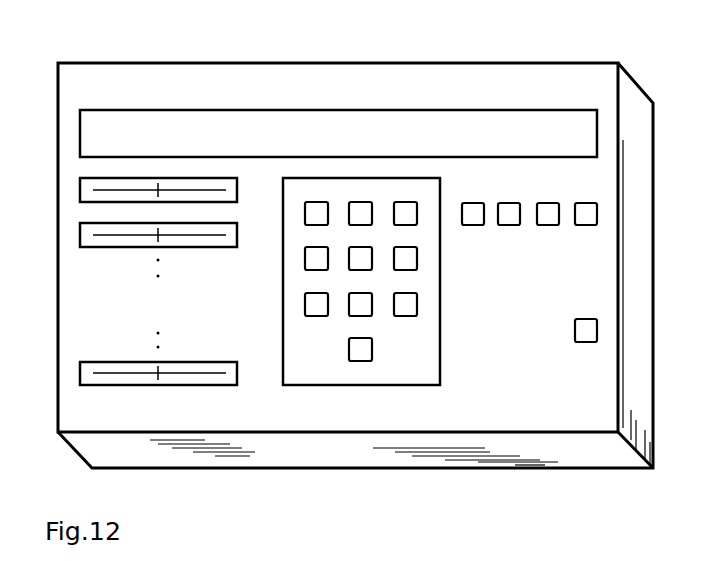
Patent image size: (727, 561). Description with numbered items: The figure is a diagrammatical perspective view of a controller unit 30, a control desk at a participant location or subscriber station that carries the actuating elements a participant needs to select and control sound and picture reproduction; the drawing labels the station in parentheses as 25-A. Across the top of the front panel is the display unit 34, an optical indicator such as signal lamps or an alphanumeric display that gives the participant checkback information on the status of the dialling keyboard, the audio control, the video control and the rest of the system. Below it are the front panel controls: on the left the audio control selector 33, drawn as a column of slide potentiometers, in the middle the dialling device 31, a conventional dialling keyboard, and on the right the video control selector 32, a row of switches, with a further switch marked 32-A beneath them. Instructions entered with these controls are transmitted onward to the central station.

The communication terminal unit 25-A is at (355, 243).
The controller unit 30 is at (121, 97).
The display unit 34 is at (340, 120).
The audio control selector 33 is at (237, 398).
The dialling device 31 is at (391, 373).
The video control selector 32 is at (609, 227).
The additional video control selector 32-A is at (575, 325).